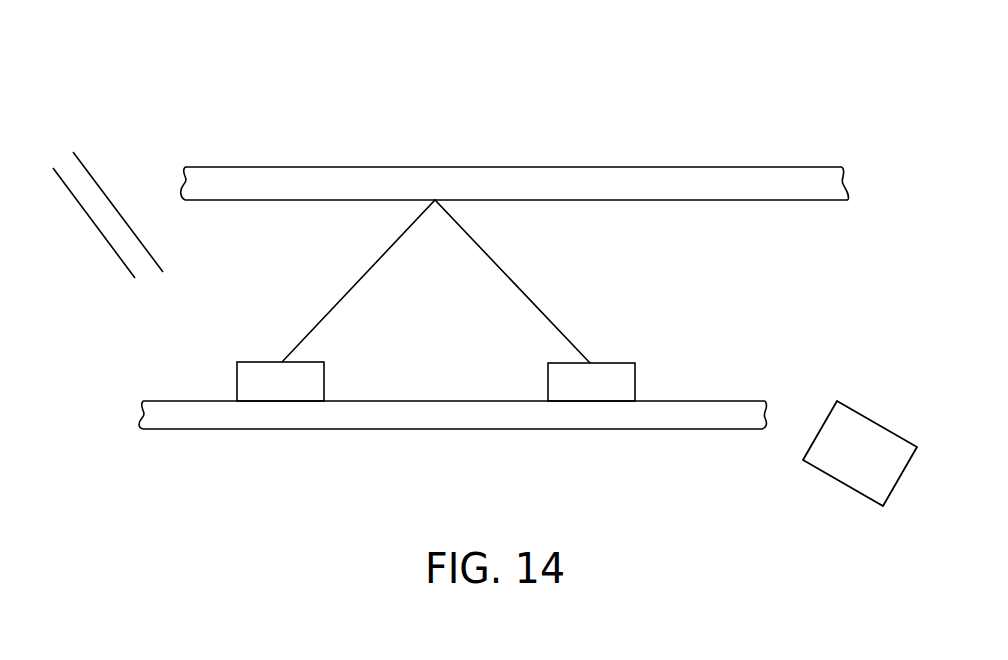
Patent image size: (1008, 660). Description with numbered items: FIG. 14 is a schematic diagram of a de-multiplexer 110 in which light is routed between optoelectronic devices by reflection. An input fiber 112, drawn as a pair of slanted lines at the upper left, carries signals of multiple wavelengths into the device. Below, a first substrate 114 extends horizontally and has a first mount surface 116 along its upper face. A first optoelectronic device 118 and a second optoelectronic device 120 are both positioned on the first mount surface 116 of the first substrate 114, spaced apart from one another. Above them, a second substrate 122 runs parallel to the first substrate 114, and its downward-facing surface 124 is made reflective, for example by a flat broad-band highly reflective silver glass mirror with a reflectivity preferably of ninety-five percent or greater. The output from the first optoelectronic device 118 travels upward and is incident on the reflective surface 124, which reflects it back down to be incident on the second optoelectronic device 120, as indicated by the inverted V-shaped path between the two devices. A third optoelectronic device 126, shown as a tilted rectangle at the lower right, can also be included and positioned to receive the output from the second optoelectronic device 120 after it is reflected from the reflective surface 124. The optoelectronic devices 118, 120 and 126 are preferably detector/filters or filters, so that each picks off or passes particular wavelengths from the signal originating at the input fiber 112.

The de-multiplexer 110 is at (353, 482).
The input fiber 112 is at (125, 220).
The first substrate 114 is at (423, 420).
The first mount surface 116 is at (722, 398).
The first optoelectronic device 118 is at (267, 375).
The second optoelectronic device 120 is at (610, 373).
The second substrate 122 is at (336, 177).
The reflective surface 124 is at (722, 198).
The third optoelectronic device 126 is at (852, 473).